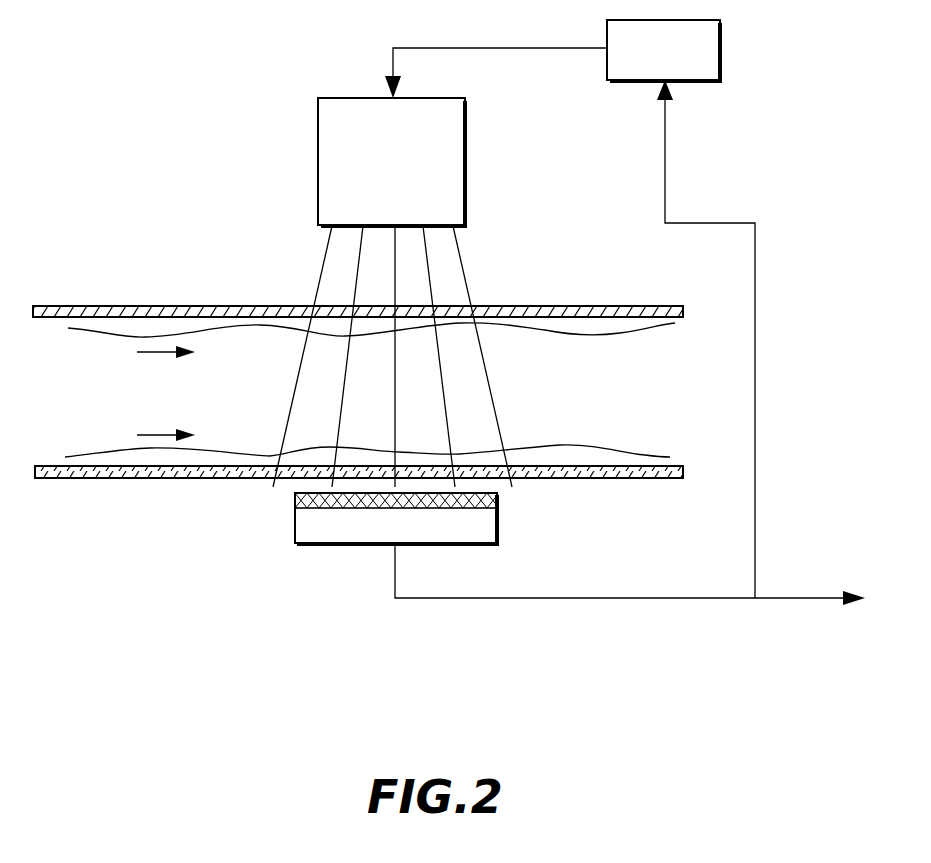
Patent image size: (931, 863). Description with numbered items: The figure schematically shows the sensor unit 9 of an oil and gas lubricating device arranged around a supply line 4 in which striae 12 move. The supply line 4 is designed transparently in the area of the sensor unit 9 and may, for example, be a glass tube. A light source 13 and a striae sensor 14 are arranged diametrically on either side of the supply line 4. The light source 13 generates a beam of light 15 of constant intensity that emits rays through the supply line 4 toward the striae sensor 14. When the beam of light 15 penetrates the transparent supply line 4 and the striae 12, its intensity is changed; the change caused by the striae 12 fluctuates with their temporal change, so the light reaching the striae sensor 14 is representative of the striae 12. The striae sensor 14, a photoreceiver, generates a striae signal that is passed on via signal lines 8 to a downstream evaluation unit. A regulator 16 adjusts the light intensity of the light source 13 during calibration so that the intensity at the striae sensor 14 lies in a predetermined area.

The supply line 4 is at (136, 484).
The signal lines 8 is at (563, 598).
The sensor unit 9 is at (210, 672).
The striae 12 is at (137, 320).
The light source 13 is at (407, 173).
The striae sensor 14 is at (295, 522).
The beam of light 15 is at (445, 261).
The regulator 16 is at (678, 63).